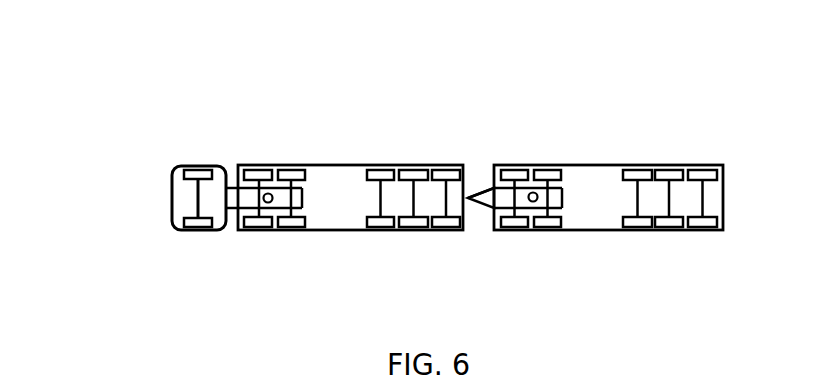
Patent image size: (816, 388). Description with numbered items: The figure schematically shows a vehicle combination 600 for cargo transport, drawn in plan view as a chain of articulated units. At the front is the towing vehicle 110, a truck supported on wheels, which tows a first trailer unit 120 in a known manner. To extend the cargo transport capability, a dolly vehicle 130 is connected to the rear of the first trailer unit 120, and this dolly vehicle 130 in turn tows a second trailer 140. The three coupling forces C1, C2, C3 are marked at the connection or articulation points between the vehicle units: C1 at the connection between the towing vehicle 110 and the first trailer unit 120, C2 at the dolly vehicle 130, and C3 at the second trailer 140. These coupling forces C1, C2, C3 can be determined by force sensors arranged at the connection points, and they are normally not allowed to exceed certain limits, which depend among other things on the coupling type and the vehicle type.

The vehicle combination 600 is at (115, 44).
The towing vehicle 110 is at (178, 230).
The first trailer unit 120 is at (325, 230).
The dolly vehicle 130 is at (492, 208).
The second trailer 140 is at (603, 230).
The coupling force C1 is at (274, 190).
The coupling force C2 is at (474, 186).
The coupling force C3 is at (536, 189).